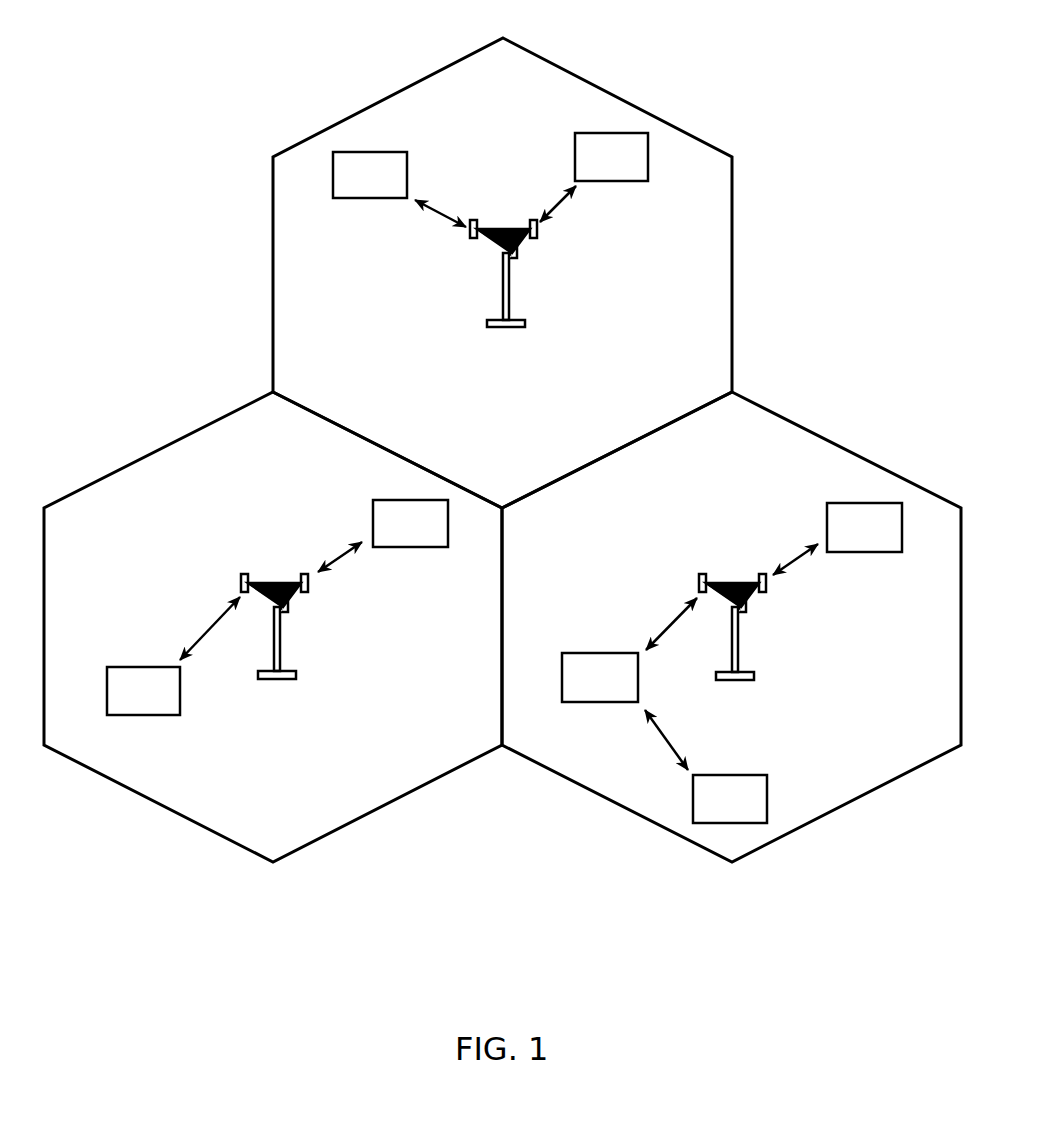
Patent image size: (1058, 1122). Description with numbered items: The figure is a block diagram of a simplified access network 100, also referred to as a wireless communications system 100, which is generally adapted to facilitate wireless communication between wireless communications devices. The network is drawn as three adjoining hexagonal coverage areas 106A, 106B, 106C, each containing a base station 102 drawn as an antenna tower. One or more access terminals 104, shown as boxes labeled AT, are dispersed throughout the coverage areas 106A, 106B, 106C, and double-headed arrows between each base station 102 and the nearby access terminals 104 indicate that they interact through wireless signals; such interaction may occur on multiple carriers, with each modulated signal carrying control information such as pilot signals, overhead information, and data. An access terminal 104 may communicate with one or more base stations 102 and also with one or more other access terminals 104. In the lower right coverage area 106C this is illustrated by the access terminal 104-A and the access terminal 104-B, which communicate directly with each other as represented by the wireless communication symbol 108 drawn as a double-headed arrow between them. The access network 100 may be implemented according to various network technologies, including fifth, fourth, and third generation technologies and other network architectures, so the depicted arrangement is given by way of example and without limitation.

The access network 100 is at (502, 438).
The base station 102 is at (506, 221).
The access terminal 104 is at (360, 198).
The access terminal 104-A is at (733, 775).
The access terminal 104-B is at (600, 653).
The coverage area 106A is at (132, 463).
The coverage area 106B is at (598, 86).
The coverage area 106C is at (845, 449).
The wireless communication symbol 108 is at (665, 735).